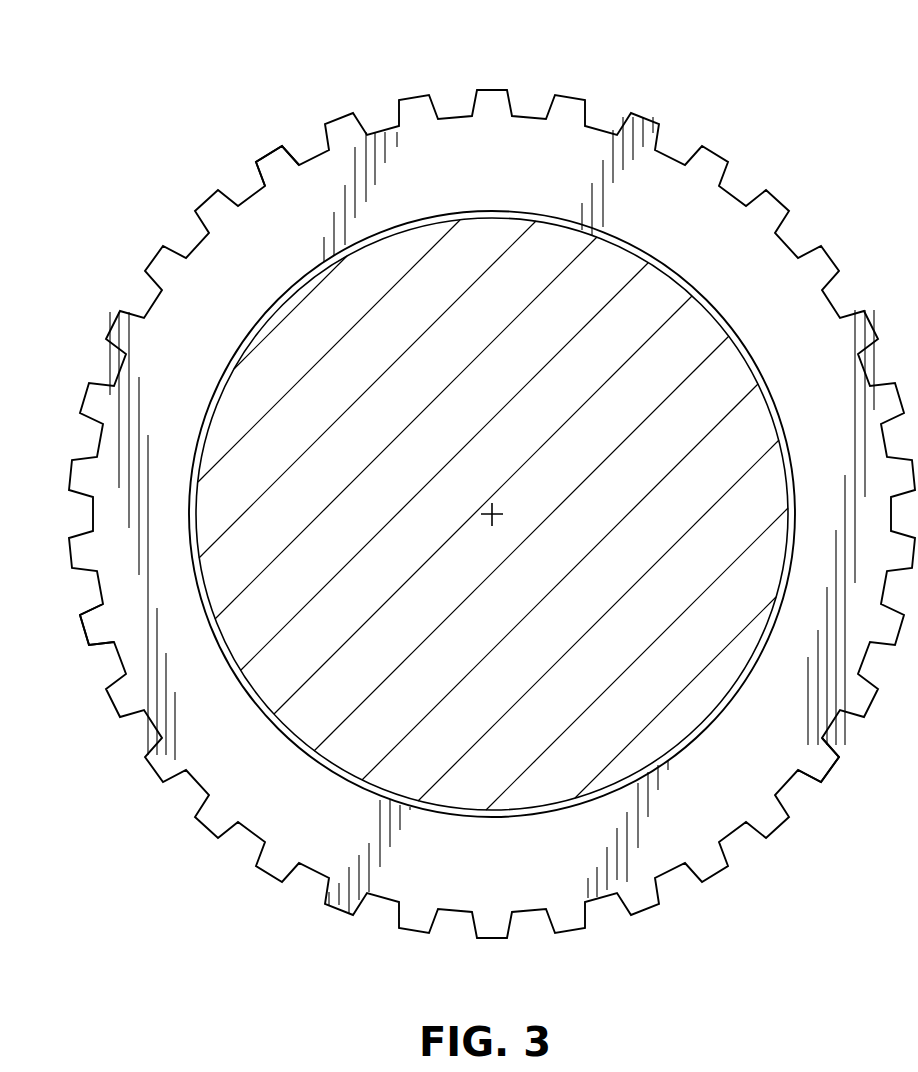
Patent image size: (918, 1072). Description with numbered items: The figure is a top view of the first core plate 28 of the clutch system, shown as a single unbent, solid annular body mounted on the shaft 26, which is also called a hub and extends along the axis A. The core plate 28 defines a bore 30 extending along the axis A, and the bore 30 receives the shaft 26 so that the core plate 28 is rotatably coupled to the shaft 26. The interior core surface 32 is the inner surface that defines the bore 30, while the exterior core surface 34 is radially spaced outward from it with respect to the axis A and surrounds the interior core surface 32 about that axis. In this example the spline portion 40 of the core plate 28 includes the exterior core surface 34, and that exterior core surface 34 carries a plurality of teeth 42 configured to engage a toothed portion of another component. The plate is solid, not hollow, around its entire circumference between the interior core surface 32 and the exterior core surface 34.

The shaft 26 is at (441, 588).
The first core plate 28 is at (465, 477).
The bore 30 is at (296, 638).
The interior core surface 32 is at (588, 212).
The exterior core surface 34 is at (490, 88).
The spline portion 40 is at (317, 770).
The teeth 42 is at (268, 150).
The axis A is at (487, 517).